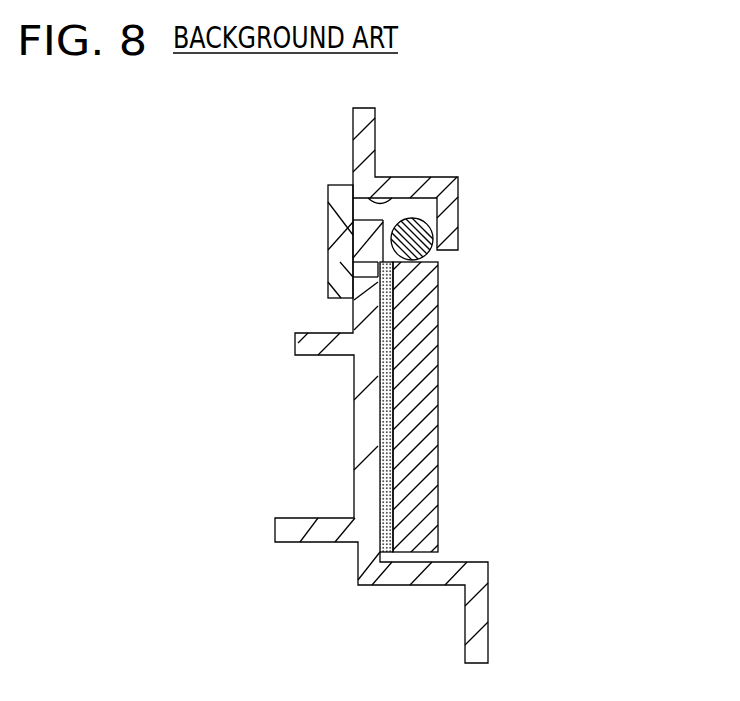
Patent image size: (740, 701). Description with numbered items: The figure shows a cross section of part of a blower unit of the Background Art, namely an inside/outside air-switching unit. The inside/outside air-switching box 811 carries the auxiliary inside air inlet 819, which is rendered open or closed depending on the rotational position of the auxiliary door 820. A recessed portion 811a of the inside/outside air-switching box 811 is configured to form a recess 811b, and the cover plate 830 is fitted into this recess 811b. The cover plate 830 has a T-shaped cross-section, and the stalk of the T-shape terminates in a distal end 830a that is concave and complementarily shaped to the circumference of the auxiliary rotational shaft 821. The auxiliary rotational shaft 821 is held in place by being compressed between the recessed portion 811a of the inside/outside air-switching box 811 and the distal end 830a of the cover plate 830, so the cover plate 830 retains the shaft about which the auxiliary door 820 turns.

The inside/outside air-switching box 811 is at (367, 570).
The recessed portion 811a is at (450, 215).
The recess 811b is at (397, 198).
The auxiliary inside air inlet 819 is at (365, 430).
The auxiliary door 820 is at (438, 402).
The auxiliary rotational shaft 821 is at (415, 242).
The cover plate 830 is at (340, 242).
The distal end 830a is at (340, 275).